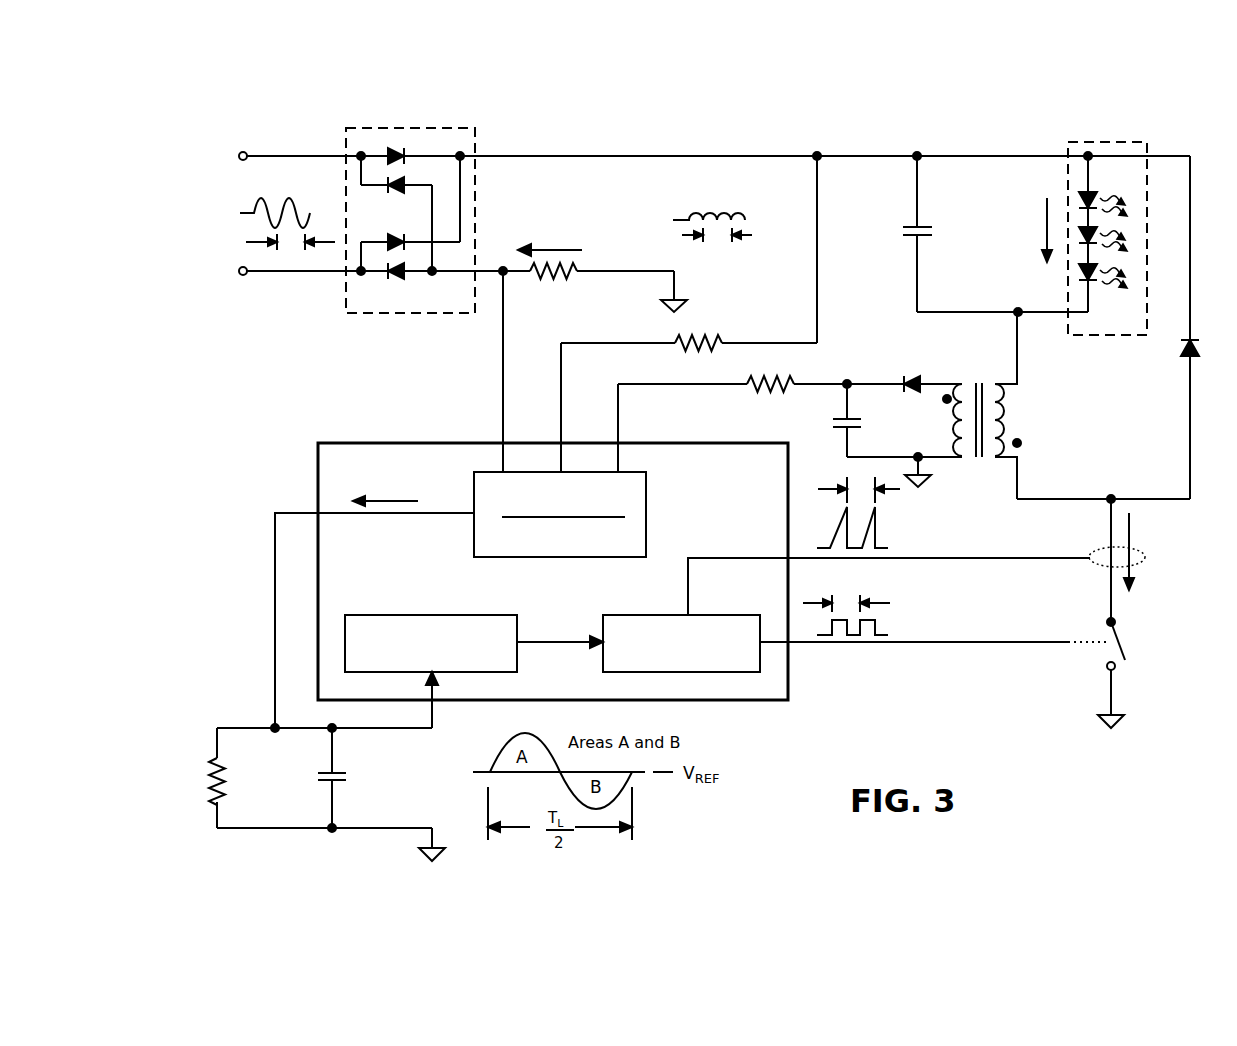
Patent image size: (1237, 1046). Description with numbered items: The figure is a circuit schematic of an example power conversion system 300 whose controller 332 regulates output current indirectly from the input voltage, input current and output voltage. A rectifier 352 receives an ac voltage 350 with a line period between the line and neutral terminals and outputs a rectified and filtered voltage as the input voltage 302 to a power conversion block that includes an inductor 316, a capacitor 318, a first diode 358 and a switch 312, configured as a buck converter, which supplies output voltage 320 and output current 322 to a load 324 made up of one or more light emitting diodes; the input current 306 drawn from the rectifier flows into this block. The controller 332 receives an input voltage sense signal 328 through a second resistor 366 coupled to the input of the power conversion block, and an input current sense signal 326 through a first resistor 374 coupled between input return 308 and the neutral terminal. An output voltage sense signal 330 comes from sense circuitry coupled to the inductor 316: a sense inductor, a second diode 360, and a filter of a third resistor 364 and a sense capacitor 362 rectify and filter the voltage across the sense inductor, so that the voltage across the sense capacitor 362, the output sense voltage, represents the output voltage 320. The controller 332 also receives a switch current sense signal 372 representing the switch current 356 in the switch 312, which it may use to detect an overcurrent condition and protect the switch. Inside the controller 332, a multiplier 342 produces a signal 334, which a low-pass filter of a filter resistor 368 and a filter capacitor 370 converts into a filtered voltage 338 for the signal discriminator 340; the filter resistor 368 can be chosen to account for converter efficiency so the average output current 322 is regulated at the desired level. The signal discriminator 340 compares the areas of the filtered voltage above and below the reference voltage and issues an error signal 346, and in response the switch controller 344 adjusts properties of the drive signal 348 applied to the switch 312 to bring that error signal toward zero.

The power conversion system 300 is at (742, 112).
The input voltage VIN 302 is at (648, 203).
The input current IIN 306 is at (530, 240).
The input return 308 is at (690, 308).
The switch SW1 312 is at (1138, 663).
The inductor L1 316 is at (1030, 395).
The capacitor C2 318 is at (908, 218).
The output voltage VO 320 is at (965, 215).
The output current IO 322 is at (1030, 250).
The load 324 is at (1120, 130).
The input current sense signal UIINS 326 is at (498, 366).
The input voltage sense signal UVINS 328 is at (572, 352).
The output voltage sense signal UVOS 330 is at (685, 390).
The controller 332 is at (335, 440).
The signal UX 334 is at (405, 490).
The filtered voltage VFILT 338 is at (425, 775).
The signal discriminator 340 is at (405, 610).
The multiplier 342 is at (652, 505).
The switch controller 344 is at (712, 605).
The error signal UERR 346 is at (570, 655).
The drive signal DRIVE 348 is at (985, 655).
The ac voltage VAC 350 is at (235, 198).
The rectifier 352 is at (352, 128).
The switch current ISW1 356 is at (1138, 572).
The diode D1 358 is at (1178, 362).
The diode D2 360 is at (895, 378).
The capacitor C3 362 is at (840, 432).
The resistor R3 364 is at (775, 372).
The resistor R2 366 is at (672, 350).
The resistor RF 368 is at (200, 800).
The capacitor CF 370 is at (325, 790).
The switch current sense signal 372 is at (980, 565).
The resistor R1 374 is at (578, 287).